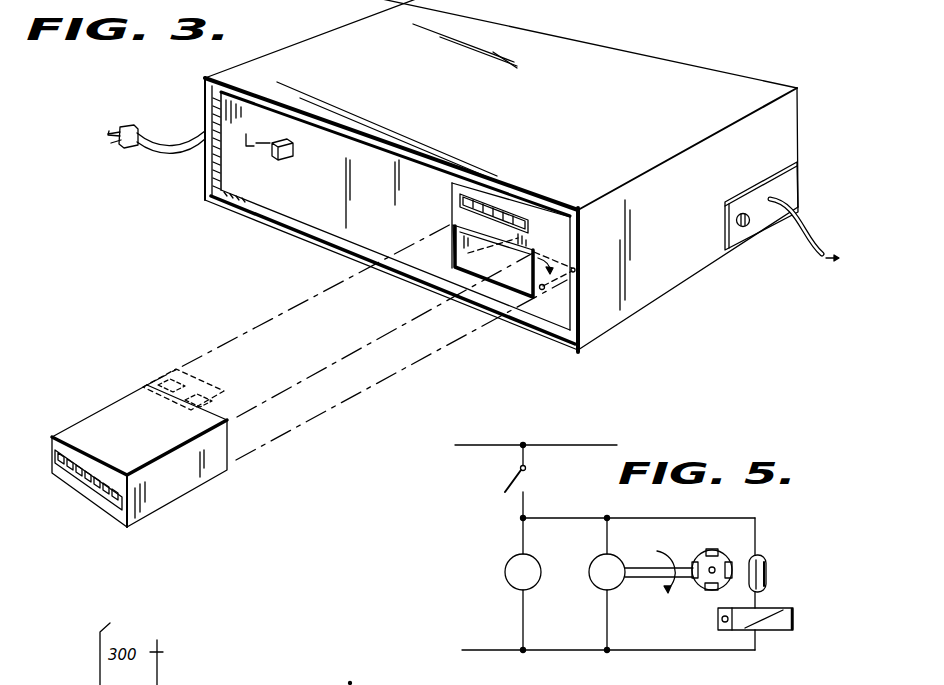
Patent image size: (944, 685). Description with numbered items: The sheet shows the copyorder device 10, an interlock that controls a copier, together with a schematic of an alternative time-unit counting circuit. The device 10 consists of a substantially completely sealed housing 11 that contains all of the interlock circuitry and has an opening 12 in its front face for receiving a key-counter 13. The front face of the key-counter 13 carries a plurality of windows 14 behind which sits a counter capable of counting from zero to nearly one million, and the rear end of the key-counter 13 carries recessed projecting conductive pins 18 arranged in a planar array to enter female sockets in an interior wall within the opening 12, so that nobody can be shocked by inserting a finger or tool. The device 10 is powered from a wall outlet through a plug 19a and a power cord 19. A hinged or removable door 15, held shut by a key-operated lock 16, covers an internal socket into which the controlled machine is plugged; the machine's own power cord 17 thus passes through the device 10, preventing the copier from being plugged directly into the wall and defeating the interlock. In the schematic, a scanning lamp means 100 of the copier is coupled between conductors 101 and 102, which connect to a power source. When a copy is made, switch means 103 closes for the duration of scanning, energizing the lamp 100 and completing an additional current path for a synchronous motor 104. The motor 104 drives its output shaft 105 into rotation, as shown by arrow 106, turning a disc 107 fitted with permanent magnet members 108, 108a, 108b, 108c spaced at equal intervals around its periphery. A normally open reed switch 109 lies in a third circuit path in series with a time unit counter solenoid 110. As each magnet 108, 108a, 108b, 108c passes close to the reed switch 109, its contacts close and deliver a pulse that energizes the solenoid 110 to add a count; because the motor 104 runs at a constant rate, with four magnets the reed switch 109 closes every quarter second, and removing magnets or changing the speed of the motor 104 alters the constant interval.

In FIG. 3, the copyorder device 10 is at (644, 31).
In FIG. 3, the housing 11 is at (532, 108).
In FIG. 3, the opening 12 is at (450, 203).
In FIG. 3, the key-counter 13 is at (113, 405).
In FIG. 3, the windows 14 is at (86, 476).
In FIG. 3, the door 15 is at (763, 187).
In FIG. 3, the key-operated lock 16 is at (737, 226).
In FIG. 3, the power cord 17 is at (806, 262).
In FIG. 3, the projecting conductive pins 18 is at (204, 387).
In FIG. 3, the power cord 19 is at (183, 124).
In FIG. 3, the plug 19a is at (136, 127).
In FIG. 5, the scanning lamp means 100 is at (505, 572).
In FIG. 5, the conductor 101 is at (592, 444).
In FIG. 5, the conductor 102 is at (557, 652).
In FIG. 5, the switch means 103 is at (511, 479).
In FIG. 5, the synchronous motor 104 is at (600, 591).
In FIG. 5, the output shaft 105 is at (637, 566).
In FIG. 5, the arrow 106 is at (667, 578).
In FIG. 5, the disc 107 is at (736, 556).
In FIG. 5, the permanent magnet member 108 is at (735, 543).
In FIG. 5, the permanent magnet member 108a is at (694, 575).
In FIG. 5, the permanent magnet member 108b is at (709, 590).
In FIG. 5, the permanent magnet member 108c is at (735, 566).
In FIG. 5, the reed switch 109 is at (768, 573).
In FIG. 5, the time unit counter solenoid 110 is at (768, 631).